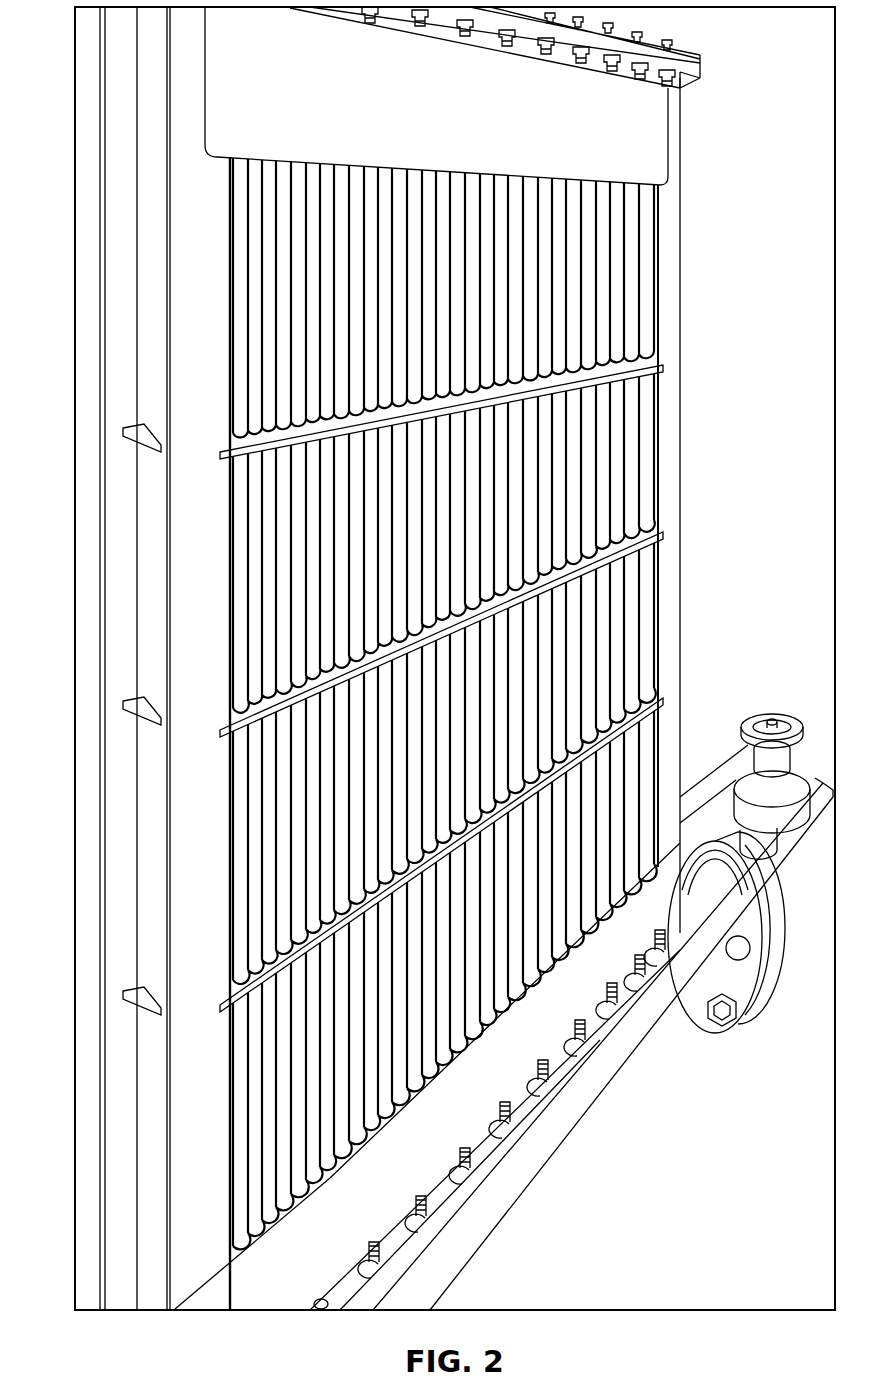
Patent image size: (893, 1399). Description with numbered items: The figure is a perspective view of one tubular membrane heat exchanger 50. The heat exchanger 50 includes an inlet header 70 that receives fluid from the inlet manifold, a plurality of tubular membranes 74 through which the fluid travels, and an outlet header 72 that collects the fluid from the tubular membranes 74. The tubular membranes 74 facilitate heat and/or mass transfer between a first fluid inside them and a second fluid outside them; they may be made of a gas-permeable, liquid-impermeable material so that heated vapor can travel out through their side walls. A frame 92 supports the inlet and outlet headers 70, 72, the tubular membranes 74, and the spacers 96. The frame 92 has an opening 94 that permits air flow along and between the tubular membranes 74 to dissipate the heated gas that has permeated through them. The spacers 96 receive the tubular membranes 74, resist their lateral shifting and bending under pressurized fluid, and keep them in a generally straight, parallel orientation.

The tubular membrane heat exchanger 50 is at (700, 266).
The inlet header 70 is at (637, 125).
The outlet header 72 is at (530, 1005).
The tubular membranes 74 is at (655, 443).
The frame 92 is at (200, 528).
The opening 94 is at (220, 372).
The spacers 96 is at (650, 545).